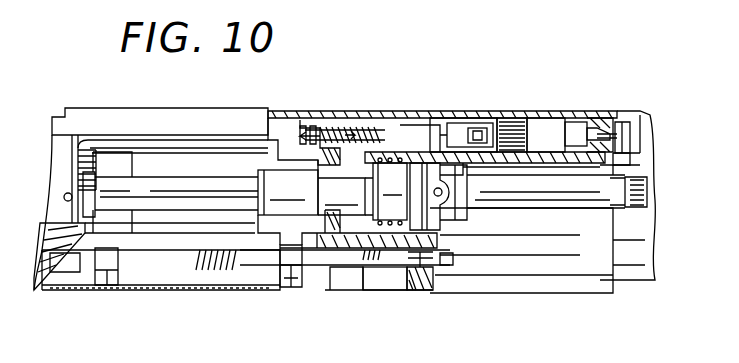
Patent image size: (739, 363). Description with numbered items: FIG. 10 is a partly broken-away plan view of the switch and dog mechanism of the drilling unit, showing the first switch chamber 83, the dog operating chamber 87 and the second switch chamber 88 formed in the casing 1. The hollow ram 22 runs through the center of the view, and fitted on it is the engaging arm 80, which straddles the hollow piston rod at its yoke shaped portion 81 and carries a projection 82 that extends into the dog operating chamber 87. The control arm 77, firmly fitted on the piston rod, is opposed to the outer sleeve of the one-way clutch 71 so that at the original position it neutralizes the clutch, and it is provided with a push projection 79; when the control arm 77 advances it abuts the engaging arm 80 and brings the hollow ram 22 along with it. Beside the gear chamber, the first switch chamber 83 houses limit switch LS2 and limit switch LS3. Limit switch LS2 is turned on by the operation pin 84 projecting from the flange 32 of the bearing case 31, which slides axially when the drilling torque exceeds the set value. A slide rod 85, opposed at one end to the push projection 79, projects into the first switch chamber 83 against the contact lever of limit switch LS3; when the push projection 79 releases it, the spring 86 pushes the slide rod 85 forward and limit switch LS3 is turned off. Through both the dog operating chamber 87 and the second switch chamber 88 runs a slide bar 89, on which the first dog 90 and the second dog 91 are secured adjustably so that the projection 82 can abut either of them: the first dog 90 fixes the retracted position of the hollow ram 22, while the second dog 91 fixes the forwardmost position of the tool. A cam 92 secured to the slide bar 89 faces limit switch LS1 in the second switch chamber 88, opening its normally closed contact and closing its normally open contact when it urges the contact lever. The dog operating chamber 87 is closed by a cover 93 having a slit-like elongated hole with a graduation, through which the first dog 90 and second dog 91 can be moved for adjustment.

The casing 1 is at (227, 118).
The hollow ram 22 is at (166, 192).
The bearing case 31 is at (608, 163).
The flange 32 is at (618, 147).
The one-way clutch 71 is at (398, 195).
The control arm 77 is at (332, 170).
The push projection 79 is at (296, 165).
The engaging arm 80 is at (278, 185).
The yoke shaped portion 81 is at (300, 160).
The projection 82 is at (268, 240).
The first switch chamber 83 is at (520, 122).
The operation pin 84 is at (612, 113).
The slide rod 85 is at (443, 112).
The spring 86 is at (378, 125).
The dog operating chamber 87 is at (175, 277).
The second switch chamber 88 is at (402, 290).
The slide bar 89 is at (442, 257).
The first dog 90 is at (293, 268).
The second dog 91 is at (115, 288).
The cam 92 is at (388, 277).
The cover 93 is at (82, 290).
The limit switch LS1 is at (353, 278).
The limit switch LS2 is at (568, 122).
The limit switch LS3 is at (486, 110).